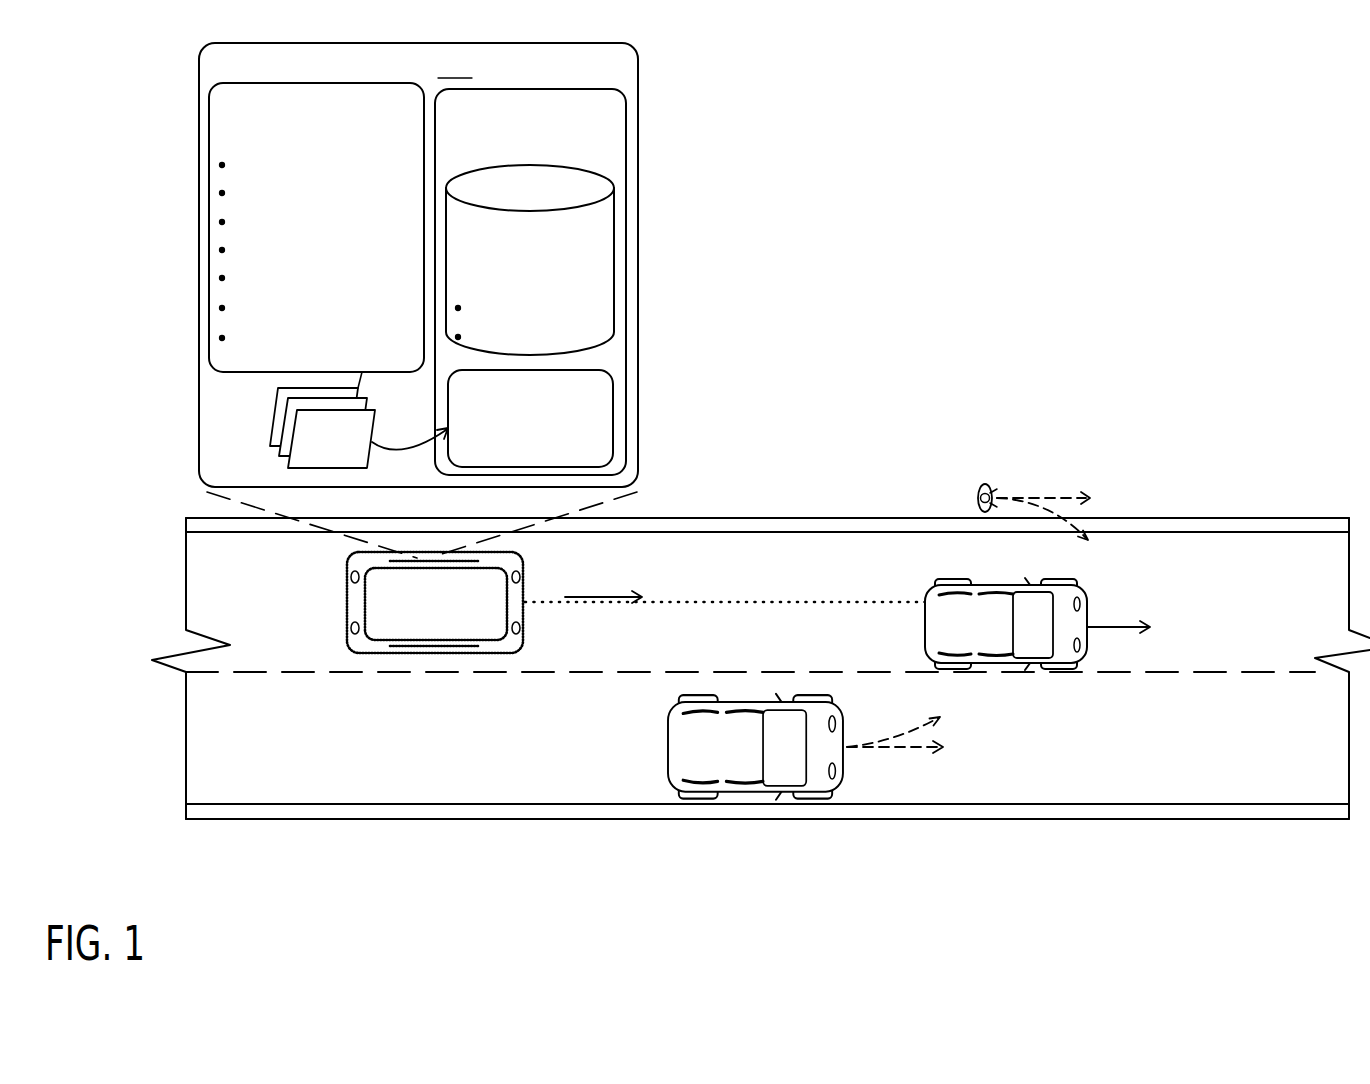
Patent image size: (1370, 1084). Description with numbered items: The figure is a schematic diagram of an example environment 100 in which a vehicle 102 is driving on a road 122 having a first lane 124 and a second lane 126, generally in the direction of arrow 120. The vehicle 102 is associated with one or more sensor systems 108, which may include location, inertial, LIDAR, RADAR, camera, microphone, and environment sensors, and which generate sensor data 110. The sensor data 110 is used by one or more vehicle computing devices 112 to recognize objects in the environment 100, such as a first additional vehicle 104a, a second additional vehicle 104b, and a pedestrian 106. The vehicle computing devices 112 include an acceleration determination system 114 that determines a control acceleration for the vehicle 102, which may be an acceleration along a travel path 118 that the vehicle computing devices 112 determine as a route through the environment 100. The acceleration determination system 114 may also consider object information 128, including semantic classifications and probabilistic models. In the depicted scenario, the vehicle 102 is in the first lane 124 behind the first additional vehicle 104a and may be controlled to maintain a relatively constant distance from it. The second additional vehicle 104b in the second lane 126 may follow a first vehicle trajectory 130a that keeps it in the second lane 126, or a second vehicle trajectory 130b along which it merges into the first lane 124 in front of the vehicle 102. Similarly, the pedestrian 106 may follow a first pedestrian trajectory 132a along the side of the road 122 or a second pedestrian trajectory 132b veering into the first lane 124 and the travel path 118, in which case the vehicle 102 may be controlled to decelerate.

The environment 100 is at (1216, 152).
The vehicle 102 is at (452, 615).
The first additional vehicle 104a is at (1000, 639).
The second additional vehicle 104b is at (744, 759).
The pedestrian 106 is at (980, 497).
The sensor system(s) 108 is at (333, 148).
The sensor data 110 is at (300, 443).
The vehicle computing device(s) 112 is at (594, 150).
The acceleration determination system 114 is at (547, 460).
The travel path 118 is at (853, 602).
The arrow 120 is at (603, 585).
The road 122 is at (1167, 518).
The first lane 124 is at (287, 609).
The second lane 126 is at (288, 744).
The object information 128 is at (547, 287).
The first vehicle trajectory 130a is at (900, 747).
The second vehicle trajectory 130b is at (888, 737).
The first pedestrian trajectory 132a is at (1052, 498).
The second pedestrian trajectory 132b is at (1033, 510).